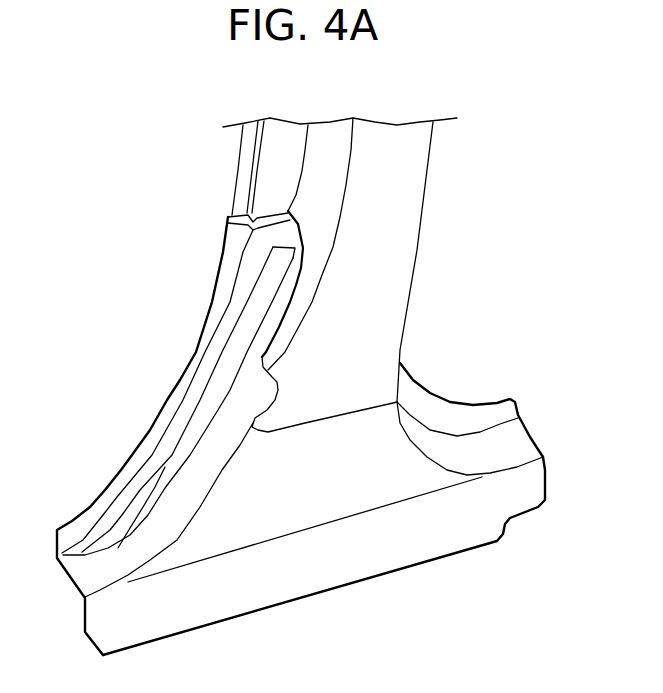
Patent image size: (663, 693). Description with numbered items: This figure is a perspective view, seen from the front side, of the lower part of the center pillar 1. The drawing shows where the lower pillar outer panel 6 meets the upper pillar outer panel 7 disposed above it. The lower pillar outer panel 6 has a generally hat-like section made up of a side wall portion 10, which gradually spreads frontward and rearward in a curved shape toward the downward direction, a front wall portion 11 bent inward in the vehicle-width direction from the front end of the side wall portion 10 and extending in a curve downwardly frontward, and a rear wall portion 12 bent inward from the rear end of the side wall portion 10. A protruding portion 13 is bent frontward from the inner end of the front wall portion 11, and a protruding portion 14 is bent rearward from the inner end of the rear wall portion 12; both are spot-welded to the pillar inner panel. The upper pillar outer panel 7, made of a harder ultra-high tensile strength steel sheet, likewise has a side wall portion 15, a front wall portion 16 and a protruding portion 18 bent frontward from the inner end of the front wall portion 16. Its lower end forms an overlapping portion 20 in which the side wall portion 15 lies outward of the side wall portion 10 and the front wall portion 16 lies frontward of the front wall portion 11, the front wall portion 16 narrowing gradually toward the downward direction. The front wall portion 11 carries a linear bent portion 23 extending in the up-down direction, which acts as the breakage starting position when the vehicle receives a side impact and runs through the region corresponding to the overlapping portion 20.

The center pillar 1 is at (180, 131).
The lower pillar outer panel 6 is at (469, 545).
The upper pillar outer panel 7 is at (426, 212).
The side wall portion 10 is at (320, 500).
The front wall portion 11 is at (198, 428).
The rear wall portion 12 is at (422, 430).
The protruding portion 13 is at (122, 480).
The protruding portion 14 is at (480, 418).
The side wall portion 15 is at (413, 162).
The front wall portion 16 is at (328, 142).
The protruding portion 18 is at (243, 183).
The overlapping portion 20 is at (363, 322).
The linear bent portion 23 is at (237, 367).